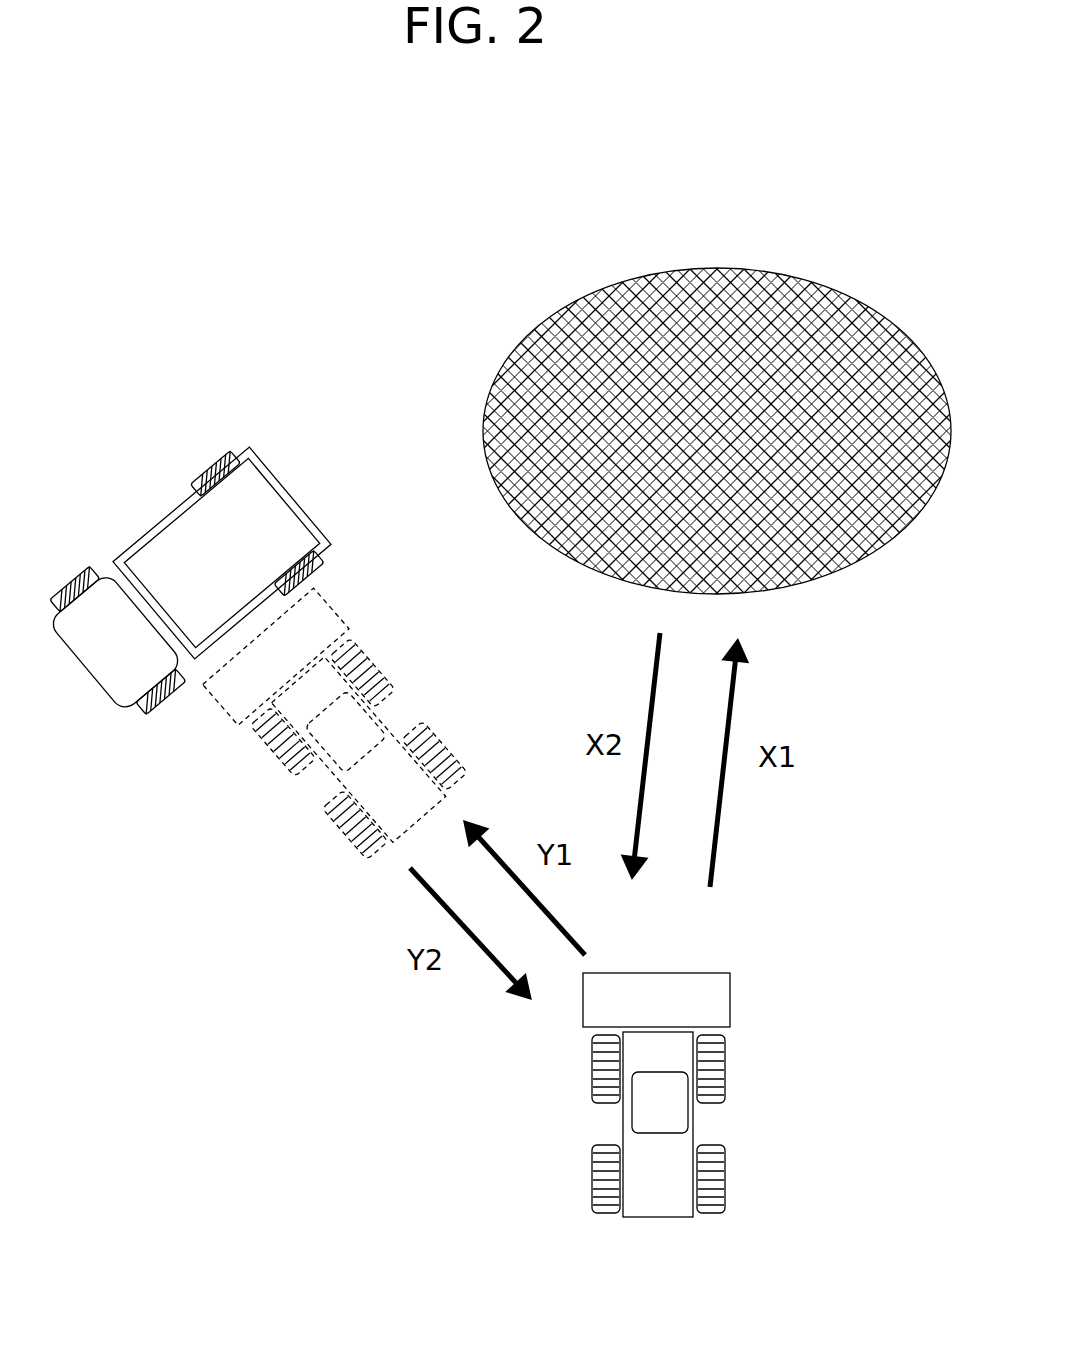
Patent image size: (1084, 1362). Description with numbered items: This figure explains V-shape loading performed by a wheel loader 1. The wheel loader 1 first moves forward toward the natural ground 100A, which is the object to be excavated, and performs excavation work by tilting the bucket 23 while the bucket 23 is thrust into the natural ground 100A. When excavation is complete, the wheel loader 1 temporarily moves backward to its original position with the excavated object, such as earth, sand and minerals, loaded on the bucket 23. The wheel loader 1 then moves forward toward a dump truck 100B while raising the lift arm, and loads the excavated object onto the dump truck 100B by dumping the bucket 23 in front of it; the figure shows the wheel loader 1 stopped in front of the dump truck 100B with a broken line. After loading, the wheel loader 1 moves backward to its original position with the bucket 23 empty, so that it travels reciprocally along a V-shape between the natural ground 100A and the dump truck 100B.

The wheel loader 1 is at (506, 878).
The bucket 23 is at (330, 610).
The natural ground 100A is at (688, 300).
The dump truck 100B is at (158, 480).